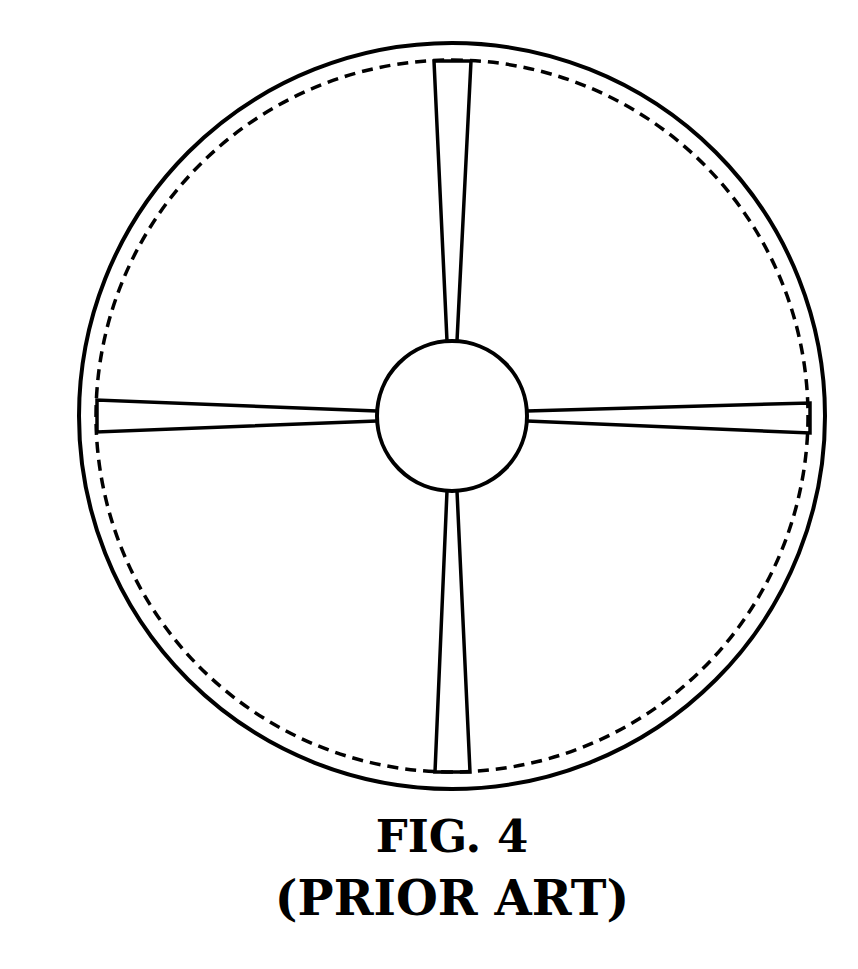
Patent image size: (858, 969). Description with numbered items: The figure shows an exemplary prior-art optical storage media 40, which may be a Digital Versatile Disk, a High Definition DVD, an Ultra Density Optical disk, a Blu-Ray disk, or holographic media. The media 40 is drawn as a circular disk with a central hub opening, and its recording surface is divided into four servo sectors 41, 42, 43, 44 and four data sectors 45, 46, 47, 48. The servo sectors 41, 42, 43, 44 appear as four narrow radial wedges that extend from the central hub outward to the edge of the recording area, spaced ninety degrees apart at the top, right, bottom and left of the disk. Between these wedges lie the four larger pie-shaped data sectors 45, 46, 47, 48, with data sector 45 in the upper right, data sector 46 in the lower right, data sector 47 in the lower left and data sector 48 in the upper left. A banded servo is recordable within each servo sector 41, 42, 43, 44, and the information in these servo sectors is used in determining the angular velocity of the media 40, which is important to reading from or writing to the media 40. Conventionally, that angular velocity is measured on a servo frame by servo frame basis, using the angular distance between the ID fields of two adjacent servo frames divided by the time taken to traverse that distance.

The optical storage media 40 is at (238, 72).
The servo sector 41 is at (452, 201).
The servo sector 42 is at (668, 418).
The servo sector 43 is at (453, 631).
The servo sector 44 is at (237, 416).
The data sector 45 is at (630, 238).
The data sector 46 is at (630, 594).
The data sector 47 is at (274, 594).
The data sector 48 is at (274, 238).